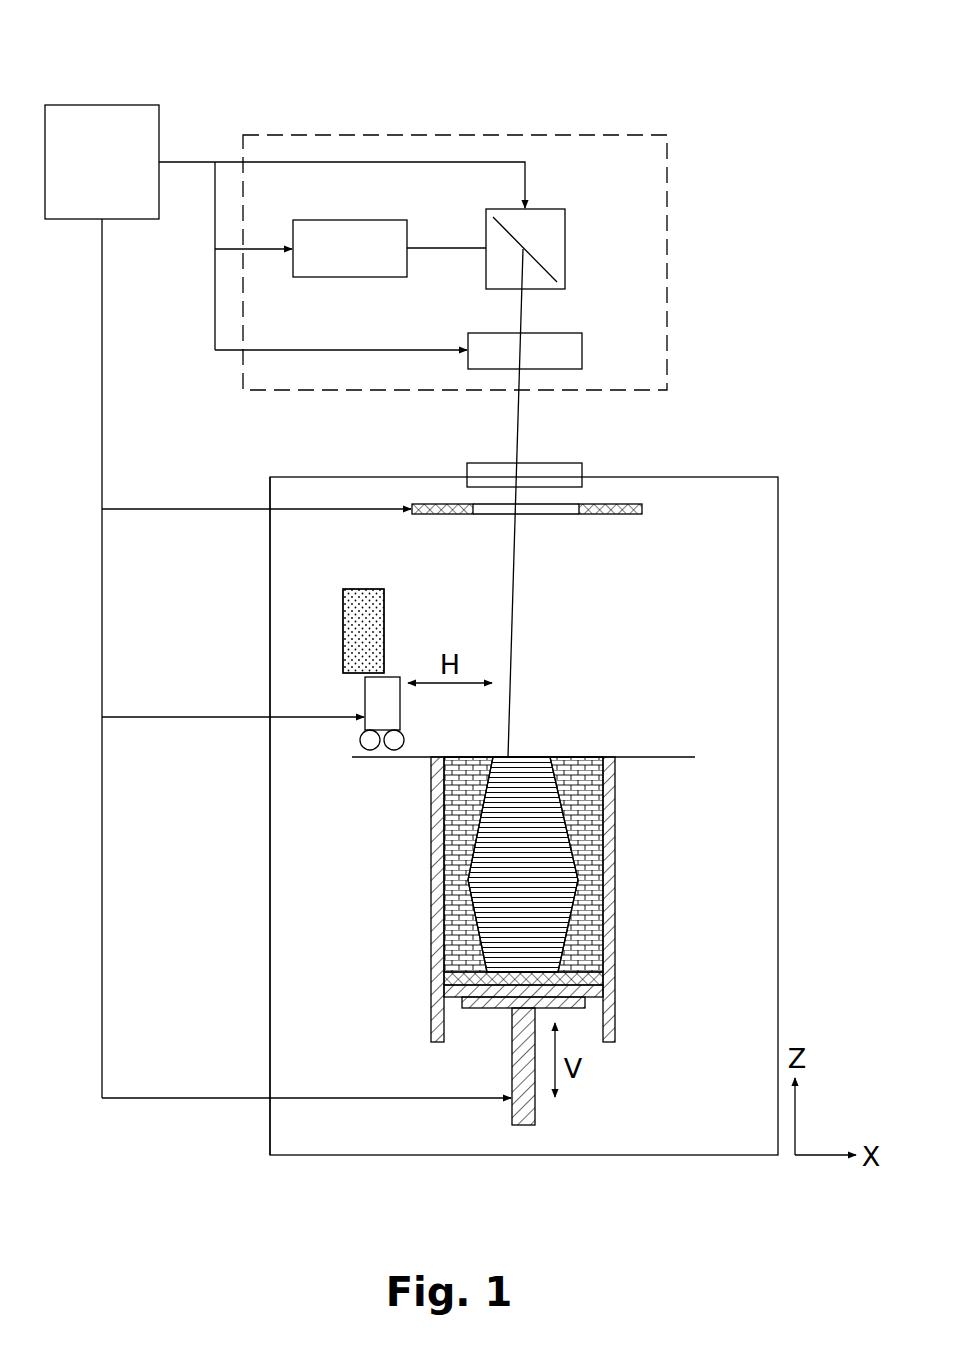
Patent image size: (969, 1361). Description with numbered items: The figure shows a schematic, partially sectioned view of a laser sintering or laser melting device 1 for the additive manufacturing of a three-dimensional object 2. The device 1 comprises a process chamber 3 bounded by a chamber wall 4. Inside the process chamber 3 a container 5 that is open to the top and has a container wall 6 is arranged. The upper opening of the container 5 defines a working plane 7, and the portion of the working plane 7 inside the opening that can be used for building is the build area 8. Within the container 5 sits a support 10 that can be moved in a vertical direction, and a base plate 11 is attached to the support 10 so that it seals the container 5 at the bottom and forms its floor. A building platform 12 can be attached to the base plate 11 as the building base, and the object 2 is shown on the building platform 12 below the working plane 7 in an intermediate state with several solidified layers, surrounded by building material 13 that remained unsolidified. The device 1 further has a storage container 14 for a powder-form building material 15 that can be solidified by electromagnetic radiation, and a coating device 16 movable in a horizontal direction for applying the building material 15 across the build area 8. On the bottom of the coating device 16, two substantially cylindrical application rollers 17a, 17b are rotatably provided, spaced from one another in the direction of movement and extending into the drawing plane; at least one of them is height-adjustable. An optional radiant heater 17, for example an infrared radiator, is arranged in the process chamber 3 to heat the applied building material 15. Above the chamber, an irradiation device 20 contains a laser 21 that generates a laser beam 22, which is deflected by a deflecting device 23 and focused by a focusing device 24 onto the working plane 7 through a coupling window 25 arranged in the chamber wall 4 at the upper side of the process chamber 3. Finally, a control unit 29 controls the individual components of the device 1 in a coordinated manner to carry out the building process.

The laser sintering or laser melting device 1 is at (724, 116).
The object 2 is at (545, 800).
The process chamber 3 is at (705, 570).
The chamber wall 4 is at (268, 948).
The container 5 is at (622, 906).
The container wall 6 is at (615, 862).
The working plane 7 is at (645, 757).
The build area 8 is at (580, 757).
The support 10 is at (485, 1012).
The base plate 11 is at (455, 990).
The building platform 12 is at (470, 970).
The building material 13 is at (455, 785).
The storage container 14 is at (360, 589).
The building material 15 is at (372, 618).
The coating device 16 is at (365, 693).
The radiant heater 17 is at (432, 504).
The application roller 17a is at (360, 740).
The application roller 17b is at (404, 740).
The irradiation device 20 is at (667, 268).
The laser 21 is at (350, 265).
The laser beam 22 is at (437, 250).
The deflecting device 23 is at (550, 225).
The focusing device 24 is at (568, 350).
The coupling window 25 is at (555, 470).
The control unit 29 is at (102, 162).